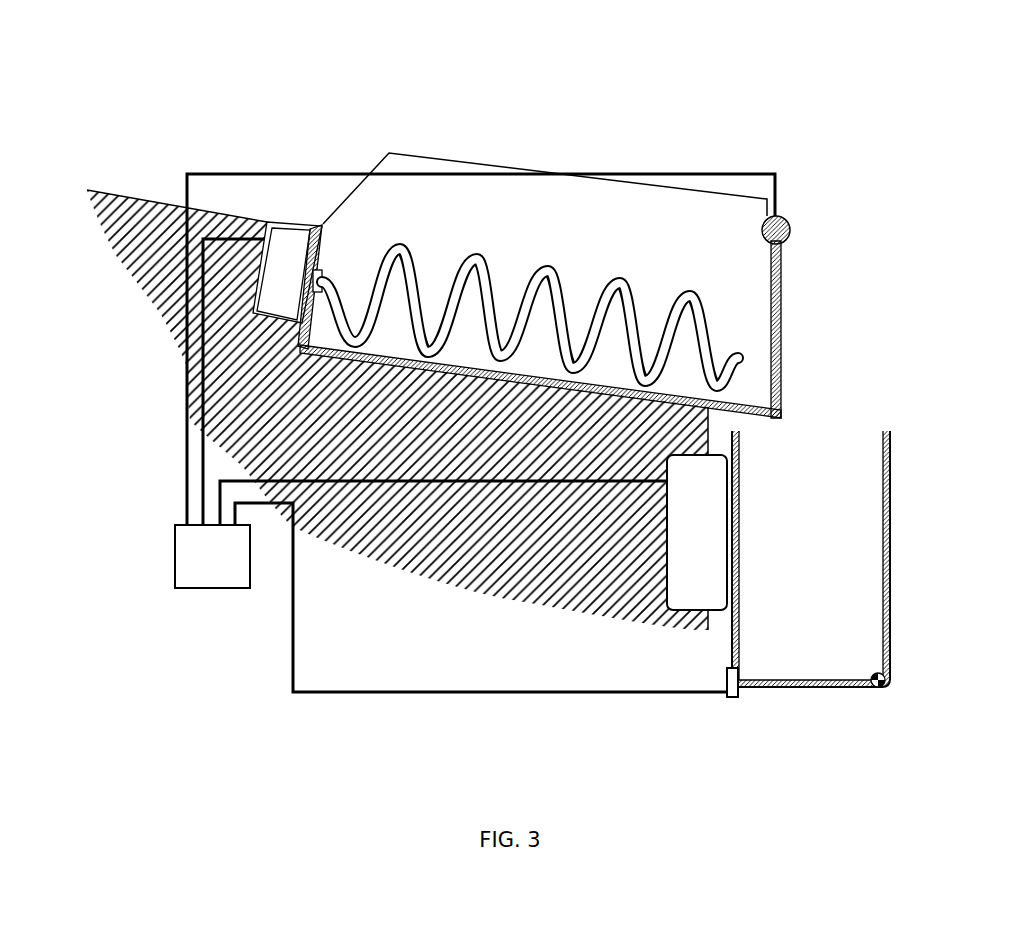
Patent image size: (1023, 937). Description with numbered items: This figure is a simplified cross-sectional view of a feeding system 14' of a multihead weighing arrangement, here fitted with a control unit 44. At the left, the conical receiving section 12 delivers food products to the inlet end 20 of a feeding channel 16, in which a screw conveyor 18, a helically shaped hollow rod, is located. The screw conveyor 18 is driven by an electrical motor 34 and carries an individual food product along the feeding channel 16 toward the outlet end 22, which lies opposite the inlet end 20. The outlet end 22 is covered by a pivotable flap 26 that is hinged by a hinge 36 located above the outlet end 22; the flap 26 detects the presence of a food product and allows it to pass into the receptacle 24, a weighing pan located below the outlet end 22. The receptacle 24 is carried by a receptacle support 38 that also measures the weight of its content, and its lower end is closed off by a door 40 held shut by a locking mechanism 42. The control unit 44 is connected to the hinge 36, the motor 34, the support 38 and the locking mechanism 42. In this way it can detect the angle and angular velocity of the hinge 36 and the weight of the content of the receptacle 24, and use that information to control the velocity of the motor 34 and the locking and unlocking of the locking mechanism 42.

The receiving section 12 is at (170, 186).
The feeding system 14' is at (481, 271).
The feeding channel 16 is at (436, 288).
The screw conveyor 18 is at (403, 243).
The inlet end 20 is at (327, 239).
The outlet end 22 is at (748, 302).
The receptacle 24 is at (892, 503).
The flap 26 is at (785, 395).
The electrical motor 34 is at (285, 272).
The hinge 36 is at (790, 229).
The receptacle support 38 is at (710, 518).
The door 40 is at (820, 685).
The locking mechanism 42 is at (755, 690).
The control unit 44 is at (213, 590).